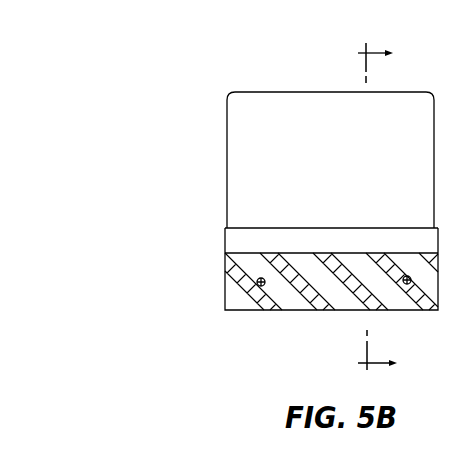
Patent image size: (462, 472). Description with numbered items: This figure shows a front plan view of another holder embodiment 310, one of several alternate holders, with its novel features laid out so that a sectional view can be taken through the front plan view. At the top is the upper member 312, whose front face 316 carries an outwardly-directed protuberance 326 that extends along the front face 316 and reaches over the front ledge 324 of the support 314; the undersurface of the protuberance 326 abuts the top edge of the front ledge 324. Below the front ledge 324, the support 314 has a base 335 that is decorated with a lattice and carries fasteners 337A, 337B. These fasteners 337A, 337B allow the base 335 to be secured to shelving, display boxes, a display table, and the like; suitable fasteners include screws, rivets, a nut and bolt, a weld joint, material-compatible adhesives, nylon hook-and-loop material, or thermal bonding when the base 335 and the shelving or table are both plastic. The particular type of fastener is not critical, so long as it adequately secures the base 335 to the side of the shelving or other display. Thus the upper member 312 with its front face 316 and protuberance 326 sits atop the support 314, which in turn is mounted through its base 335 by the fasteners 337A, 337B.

The holder embodiment 310 is at (157, 143).
The upper member 312 is at (213, 95).
The support 314 is at (140, 310).
The front face 316 is at (352, 152).
The front ledge 324 is at (237, 237).
The protuberance 326 is at (250, 227).
The base 335 is at (227, 278).
The fastener 337A is at (302, 331).
The fastener 337B is at (405, 284).